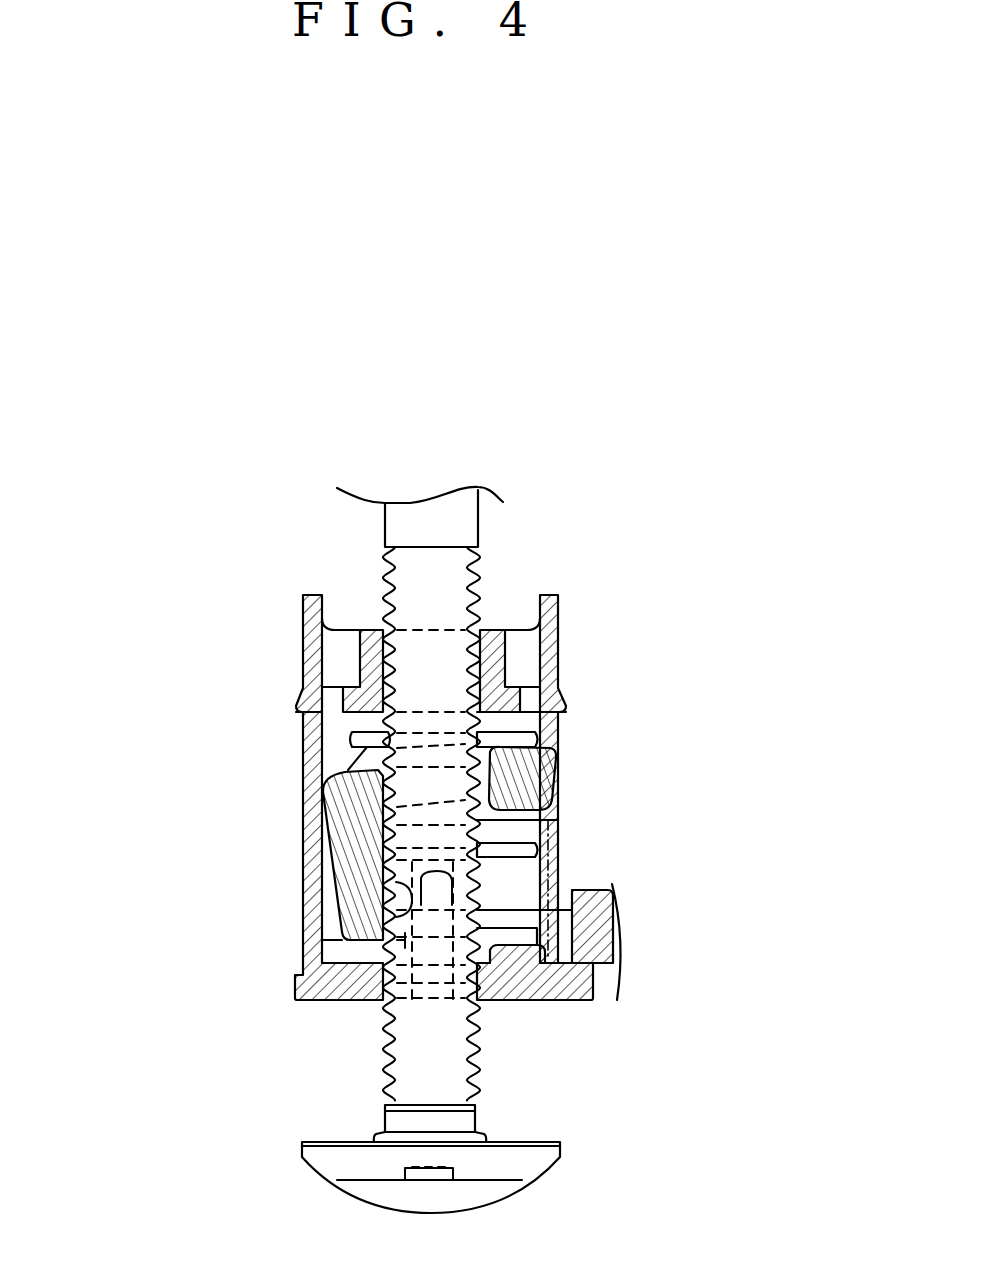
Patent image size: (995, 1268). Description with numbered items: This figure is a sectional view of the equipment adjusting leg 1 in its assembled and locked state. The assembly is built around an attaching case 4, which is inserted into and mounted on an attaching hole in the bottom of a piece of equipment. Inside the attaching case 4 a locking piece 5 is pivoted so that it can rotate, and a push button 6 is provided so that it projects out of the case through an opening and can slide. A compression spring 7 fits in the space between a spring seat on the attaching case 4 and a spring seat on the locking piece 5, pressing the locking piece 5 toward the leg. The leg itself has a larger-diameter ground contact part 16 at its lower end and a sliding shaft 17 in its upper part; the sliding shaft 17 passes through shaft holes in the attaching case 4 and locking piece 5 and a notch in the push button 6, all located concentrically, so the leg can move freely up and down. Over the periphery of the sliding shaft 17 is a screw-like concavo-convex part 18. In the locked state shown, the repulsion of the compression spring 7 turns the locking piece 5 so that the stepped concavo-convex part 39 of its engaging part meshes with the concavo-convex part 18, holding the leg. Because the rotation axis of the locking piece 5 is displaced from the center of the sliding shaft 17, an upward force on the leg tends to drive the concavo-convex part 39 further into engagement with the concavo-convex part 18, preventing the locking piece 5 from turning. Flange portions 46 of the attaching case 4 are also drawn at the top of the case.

The equipment adjusting leg 1 is at (238, 530).
The attaching case 4 is at (595, 636).
The locking piece 5 is at (340, 895).
The push button 6 is at (596, 885).
The compression spring 7 is at (555, 803).
The ground contact part 16 is at (265, 1152).
The sliding shaft 17 is at (320, 1071).
The concavo-convex part 18 is at (482, 588).
The concavo-convex part 39 is at (338, 928).
The flange 46 is at (295, 702).